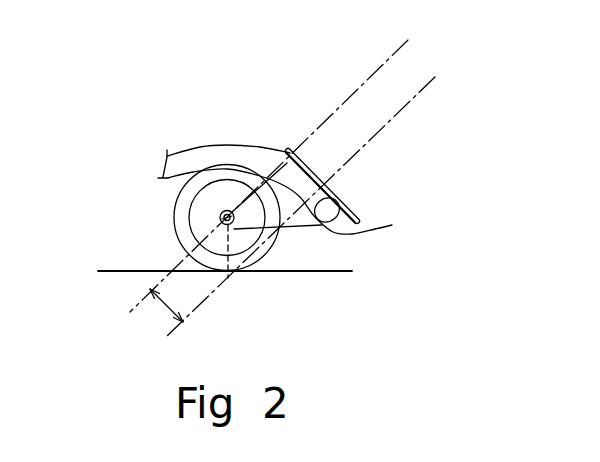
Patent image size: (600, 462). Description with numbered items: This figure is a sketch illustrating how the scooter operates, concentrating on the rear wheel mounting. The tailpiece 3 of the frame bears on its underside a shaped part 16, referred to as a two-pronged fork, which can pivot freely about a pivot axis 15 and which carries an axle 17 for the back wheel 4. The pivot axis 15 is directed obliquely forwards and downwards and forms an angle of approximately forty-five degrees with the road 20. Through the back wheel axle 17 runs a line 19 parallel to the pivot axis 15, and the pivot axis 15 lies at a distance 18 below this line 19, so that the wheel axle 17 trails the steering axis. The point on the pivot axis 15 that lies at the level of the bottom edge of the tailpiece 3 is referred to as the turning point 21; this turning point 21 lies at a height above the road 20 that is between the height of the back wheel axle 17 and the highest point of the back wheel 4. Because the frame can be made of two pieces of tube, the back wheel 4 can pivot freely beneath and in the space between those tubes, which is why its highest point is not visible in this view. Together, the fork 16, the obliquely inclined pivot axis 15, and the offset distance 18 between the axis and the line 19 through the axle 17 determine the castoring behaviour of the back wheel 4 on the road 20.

The tailpiece 3 is at (282, 170).
The back wheel 4 is at (172, 226).
The pivot axis 15 is at (372, 143).
The shaped part (two-pronged fork) 16 is at (273, 209).
The axle 17 is at (231, 223).
The distance 18 is at (165, 311).
The line 19 is at (351, 98).
The road 20 is at (307, 272).
The turning point 21 is at (366, 206).